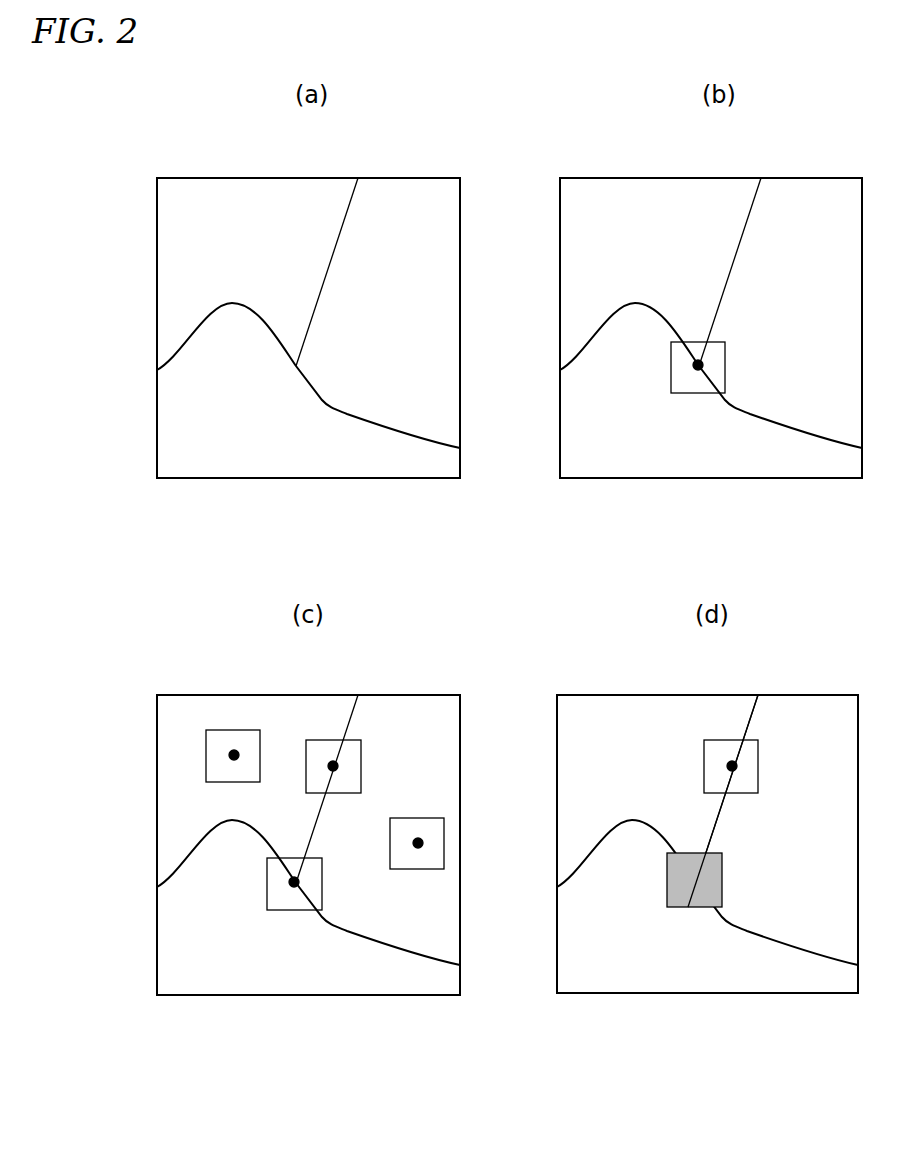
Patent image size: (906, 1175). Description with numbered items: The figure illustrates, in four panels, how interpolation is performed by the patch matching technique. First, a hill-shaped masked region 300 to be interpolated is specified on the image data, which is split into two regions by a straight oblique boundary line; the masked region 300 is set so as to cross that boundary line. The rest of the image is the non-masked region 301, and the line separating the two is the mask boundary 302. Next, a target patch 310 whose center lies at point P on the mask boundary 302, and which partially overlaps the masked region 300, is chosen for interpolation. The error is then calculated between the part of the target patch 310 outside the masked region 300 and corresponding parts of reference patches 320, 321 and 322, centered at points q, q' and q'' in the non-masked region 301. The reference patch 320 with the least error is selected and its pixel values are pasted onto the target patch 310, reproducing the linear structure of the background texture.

The masked region 300 is at (395, 458).
The non-masked region 301 is at (181, 190).
The mask boundary 302 is at (151, 375).
The target patch 310 is at (697, 394).
The reference patch 320 is at (328, 740).
The reference patch 321 is at (236, 730).
The reference patch 322 is at (445, 845).